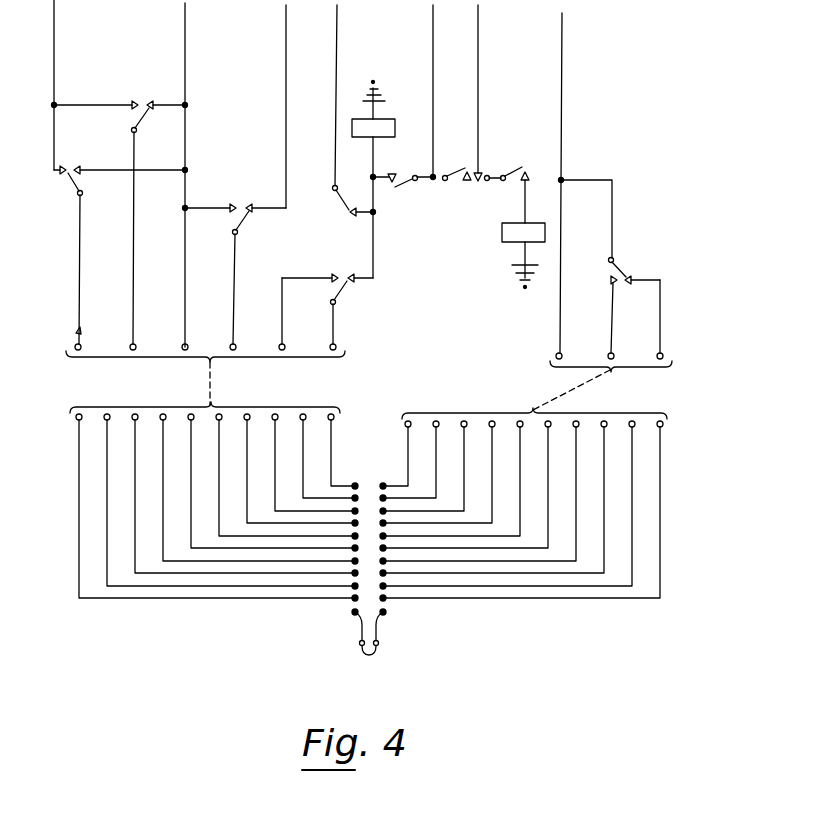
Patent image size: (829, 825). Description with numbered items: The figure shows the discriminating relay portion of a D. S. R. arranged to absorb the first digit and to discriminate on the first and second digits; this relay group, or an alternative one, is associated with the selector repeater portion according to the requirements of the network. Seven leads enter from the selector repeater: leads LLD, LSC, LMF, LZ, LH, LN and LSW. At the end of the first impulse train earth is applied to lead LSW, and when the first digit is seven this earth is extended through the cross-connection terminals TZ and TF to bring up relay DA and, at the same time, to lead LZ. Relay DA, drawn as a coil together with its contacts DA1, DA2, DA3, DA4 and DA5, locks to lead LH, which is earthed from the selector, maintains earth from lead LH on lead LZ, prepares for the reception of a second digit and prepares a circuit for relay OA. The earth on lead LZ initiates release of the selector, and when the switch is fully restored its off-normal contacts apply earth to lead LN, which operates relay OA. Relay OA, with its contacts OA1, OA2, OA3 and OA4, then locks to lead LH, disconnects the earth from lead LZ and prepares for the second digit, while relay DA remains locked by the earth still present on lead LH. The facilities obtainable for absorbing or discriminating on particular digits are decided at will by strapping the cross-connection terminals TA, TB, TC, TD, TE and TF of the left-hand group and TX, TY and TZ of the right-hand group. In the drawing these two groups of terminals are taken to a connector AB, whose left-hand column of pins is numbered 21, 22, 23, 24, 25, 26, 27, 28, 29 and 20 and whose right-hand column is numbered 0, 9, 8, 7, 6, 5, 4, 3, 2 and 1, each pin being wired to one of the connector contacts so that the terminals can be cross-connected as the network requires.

The LLD supply line LLD is at (71, 85).
The LSC supply line LSC is at (201, 175).
The LMF supply line LMF is at (304, 106).
The lead LZ is at (348, 95).
The lead LH is at (444, 92).
The lead LN is at (488, 93).
The lead LSW is at (580, 182).
The relay contact DA1 is at (523, 165).
The relay contact DA2 is at (119, 108).
The relay contact DA3 is at (119, 172).
The relay contact DA4 is at (403, 191).
The relay DA5 contact and coil DA5 is at (418, 129).
The relay contact OA1 is at (610, 234).
The relay contact OA2 is at (327, 282).
The relay contact OA3 is at (339, 203).
The relay OA4 contact and coil OA4 is at (493, 232).
The cross-connection terminal TA is at (89, 276).
The cross-connection terminal TB is at (144, 245).
The cross-connection terminal TC is at (196, 348).
The cross-connection terminal TD is at (245, 296).
The cross-connection terminal TE is at (344, 331).
The cross-connection terminal TF is at (292, 318).
The cross-connection terminal TX is at (671, 323).
The cross-connection terminal TY is at (622, 325).
The cross-connection terminal TZ is at (570, 357).
The connector AB is at (369, 557).
The connector pin 0 is at (402, 455).
The connector pin 1 is at (528, 511).
The connector pin 2 is at (514, 505).
The connector pin 3 is at (500, 498).
The connector pin 4 is at (486, 492).
The connector pin 5 is at (472, 486).
The connector pin 6 is at (458, 480).
The connector pin 7 is at (444, 473).
The connector pin 8 is at (430, 467).
The connector pin 9 is at (416, 461).
The connector pin 20 is at (343, 451).
The connector pin 21 is at (217, 507).
The connector pin 22 is at (231, 501).
The connector pin 23 is at (245, 495).
The connector pin 24 is at (259, 489).
The connector pin 25 is at (273, 482).
The connector pin 26 is at (287, 476).
The connector pin 27 is at (301, 470).
The connector pin 28 is at (315, 464).
The connector pin 29 is at (329, 457).